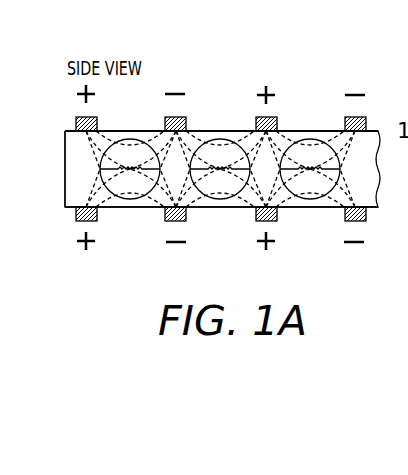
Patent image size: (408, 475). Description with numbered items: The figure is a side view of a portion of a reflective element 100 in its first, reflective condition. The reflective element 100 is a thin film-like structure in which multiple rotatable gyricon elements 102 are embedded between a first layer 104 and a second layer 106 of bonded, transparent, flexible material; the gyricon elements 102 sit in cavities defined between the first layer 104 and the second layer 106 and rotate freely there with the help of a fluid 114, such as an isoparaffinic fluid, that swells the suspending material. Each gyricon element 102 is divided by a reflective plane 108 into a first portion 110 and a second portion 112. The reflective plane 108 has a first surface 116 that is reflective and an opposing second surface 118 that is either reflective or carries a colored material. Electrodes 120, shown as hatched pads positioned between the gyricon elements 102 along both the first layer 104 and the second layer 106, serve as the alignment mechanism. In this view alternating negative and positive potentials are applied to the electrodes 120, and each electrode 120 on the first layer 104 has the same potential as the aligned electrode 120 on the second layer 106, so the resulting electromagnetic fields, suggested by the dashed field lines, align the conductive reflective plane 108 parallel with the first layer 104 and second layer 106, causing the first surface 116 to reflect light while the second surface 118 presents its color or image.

The reflective element 100 is at (164, 52).
The rotatable gyricon elements 102 is at (100, 169).
The first layer 104 is at (340, 133).
The second layer 106 is at (220, 197).
The reflective plane 108 is at (120, 150).
The first portion 110 is at (137, 160).
The second portion 112 is at (131, 182).
The fluid 114 is at (80, 157).
The first surface 116 is at (240, 133).
The second surface 118 is at (215, 193).
The electrodes 120 is at (78, 117).